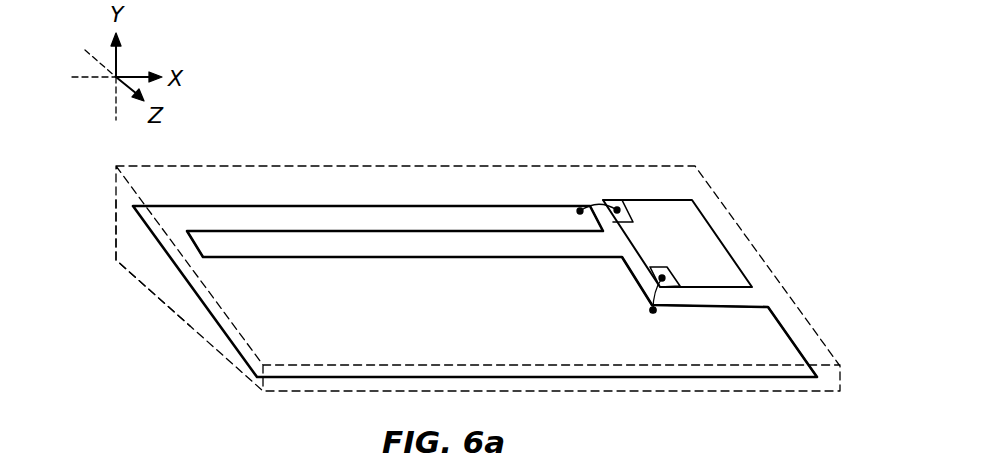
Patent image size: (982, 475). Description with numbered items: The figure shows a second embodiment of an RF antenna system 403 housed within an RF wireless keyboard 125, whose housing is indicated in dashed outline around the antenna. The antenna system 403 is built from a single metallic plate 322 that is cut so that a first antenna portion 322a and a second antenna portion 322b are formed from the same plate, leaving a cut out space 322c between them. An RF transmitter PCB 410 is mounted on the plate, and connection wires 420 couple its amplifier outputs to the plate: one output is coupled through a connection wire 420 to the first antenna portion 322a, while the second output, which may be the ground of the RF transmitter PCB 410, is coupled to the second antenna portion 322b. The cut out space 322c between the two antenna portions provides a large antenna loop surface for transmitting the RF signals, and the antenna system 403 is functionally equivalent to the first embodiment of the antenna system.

The RF wireless keyboard 125 is at (297, 165).
The RF antenna system 403 is at (137, 240).
The metallic plate 322 is at (768, 342).
The first antenna portion 322a is at (338, 220).
The second antenna portion 322b is at (617, 352).
The cut out space 322c is at (455, 243).
The RF transmitter PCB 410 is at (687, 210).
The connection wires 420 is at (586, 209).